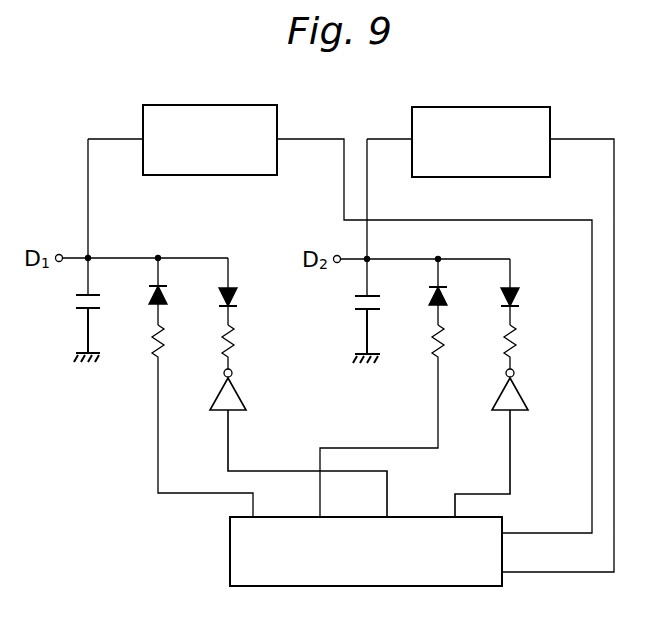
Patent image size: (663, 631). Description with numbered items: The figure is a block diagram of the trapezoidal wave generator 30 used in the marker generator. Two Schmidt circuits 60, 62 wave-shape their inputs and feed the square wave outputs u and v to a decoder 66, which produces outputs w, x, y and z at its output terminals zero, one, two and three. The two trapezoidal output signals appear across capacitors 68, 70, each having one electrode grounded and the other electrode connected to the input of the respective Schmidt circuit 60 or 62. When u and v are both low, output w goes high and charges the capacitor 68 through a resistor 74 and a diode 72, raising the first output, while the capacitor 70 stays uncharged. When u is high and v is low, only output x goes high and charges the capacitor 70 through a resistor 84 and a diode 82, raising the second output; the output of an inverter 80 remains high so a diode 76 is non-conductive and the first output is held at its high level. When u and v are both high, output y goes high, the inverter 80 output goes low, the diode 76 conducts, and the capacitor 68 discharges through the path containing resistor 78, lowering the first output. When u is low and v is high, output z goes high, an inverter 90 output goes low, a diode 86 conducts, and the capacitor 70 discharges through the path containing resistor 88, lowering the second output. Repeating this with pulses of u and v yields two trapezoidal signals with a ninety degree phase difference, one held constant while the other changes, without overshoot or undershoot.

The trapezoidal wave generator 30 is at (255, 78).
The Schmidt circuit 60 is at (279, 119).
The Schmidt circuit 62 is at (552, 121).
The decoder 66 is at (230, 562).
The capacitor 68 is at (77, 304).
The capacitor 70 is at (353, 304).
The diode 72 is at (150, 298).
The resistor 74 is at (150, 352).
The diode 76 is at (221, 298).
The resistor 78 is at (220, 352).
The inverter 80 is at (246, 402).
The diode 82 is at (433, 298).
The resistor 84 is at (434, 352).
The diode 86 is at (519, 296).
The resistor 88 is at (519, 346).
The inverter 90 is at (526, 402).